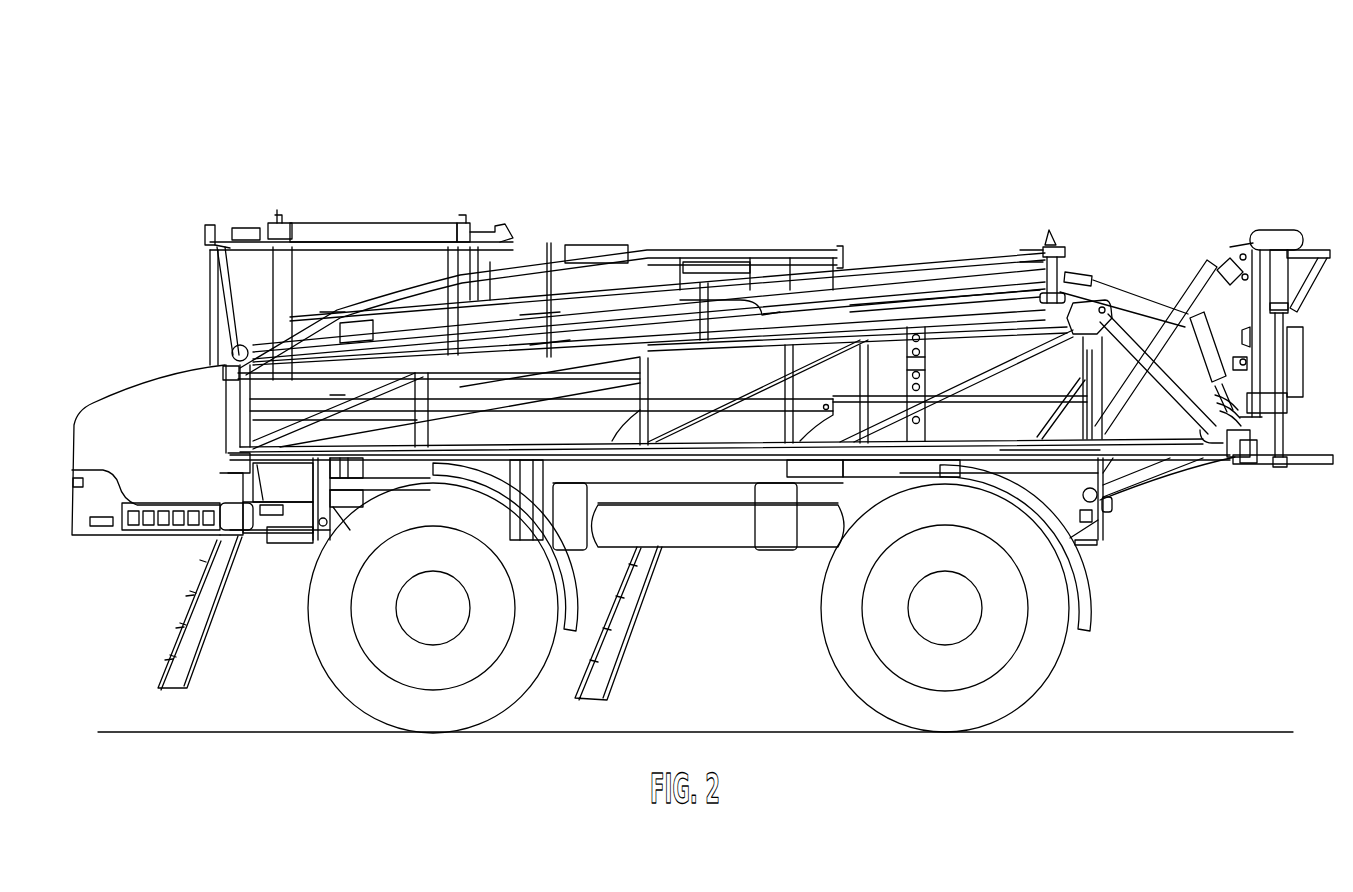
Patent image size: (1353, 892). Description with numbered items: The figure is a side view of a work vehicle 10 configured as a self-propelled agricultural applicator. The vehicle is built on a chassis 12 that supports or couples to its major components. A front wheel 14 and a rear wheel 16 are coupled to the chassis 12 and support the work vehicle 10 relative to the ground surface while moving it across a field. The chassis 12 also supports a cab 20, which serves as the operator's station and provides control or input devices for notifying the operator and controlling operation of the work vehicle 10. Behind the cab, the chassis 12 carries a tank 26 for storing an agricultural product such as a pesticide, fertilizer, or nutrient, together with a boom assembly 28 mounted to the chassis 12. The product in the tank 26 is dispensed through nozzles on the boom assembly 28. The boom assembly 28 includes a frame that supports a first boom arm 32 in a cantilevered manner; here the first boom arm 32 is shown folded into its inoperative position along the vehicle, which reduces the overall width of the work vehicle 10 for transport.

The work vehicle 10 is at (1102, 172).
The chassis 12 is at (702, 530).
The front wheel 14 is at (512, 673).
The rear wheel 16 is at (1022, 683).
The cab 20 is at (356, 224).
The tank 26 is at (583, 286).
The boom assembly 28 is at (923, 220).
The first boom arm 32 is at (878, 250).